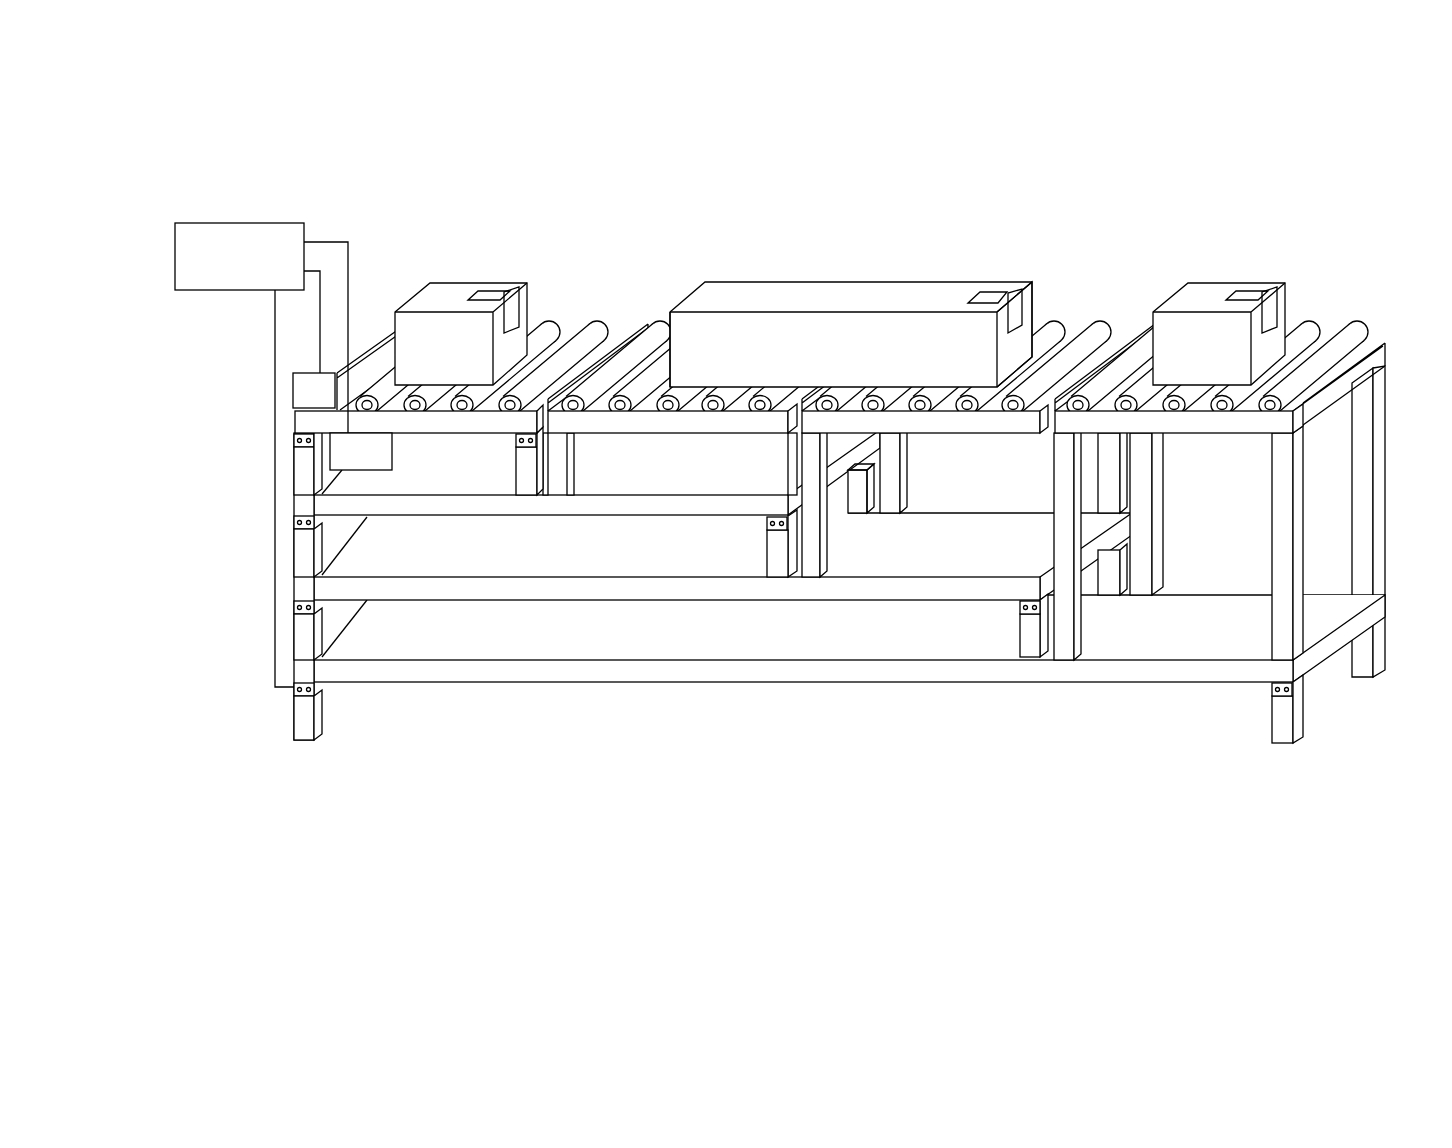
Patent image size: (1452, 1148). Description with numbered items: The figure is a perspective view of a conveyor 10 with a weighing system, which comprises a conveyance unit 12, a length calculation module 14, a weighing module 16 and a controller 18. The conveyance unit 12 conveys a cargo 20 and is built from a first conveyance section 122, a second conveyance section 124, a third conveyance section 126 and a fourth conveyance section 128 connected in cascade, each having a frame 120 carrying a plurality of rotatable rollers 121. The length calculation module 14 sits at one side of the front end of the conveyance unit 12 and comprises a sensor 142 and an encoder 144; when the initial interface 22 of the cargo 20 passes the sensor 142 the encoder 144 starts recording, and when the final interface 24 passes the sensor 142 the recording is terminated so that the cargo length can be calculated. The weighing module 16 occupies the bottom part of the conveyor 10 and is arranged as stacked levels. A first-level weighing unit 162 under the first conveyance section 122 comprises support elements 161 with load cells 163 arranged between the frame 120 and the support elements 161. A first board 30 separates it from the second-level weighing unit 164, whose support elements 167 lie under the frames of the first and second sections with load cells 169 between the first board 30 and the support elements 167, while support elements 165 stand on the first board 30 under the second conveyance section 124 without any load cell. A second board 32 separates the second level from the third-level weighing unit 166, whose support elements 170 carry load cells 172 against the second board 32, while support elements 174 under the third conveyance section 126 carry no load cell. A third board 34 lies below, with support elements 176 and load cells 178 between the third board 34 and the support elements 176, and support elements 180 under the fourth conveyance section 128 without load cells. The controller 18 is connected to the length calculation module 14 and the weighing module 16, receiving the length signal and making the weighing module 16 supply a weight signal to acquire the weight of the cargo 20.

The conveyor 10 is at (1436, 215).
The conveyance unit 12 is at (555, 222).
The length calculation module 14 is at (216, 360).
The weighing module 16 is at (171, 440).
The controller 18 is at (240, 230).
The cargo 20 is at (835, 293).
The initial interface 22 is at (1017, 353).
The final interface 24 is at (668, 349).
The first board 30 is at (680, 507).
The second board 32 is at (902, 590).
The third board 34 is at (903, 668).
The frame 120 is at (452, 425).
The rollers 121 is at (388, 355).
The first conveyance section 122 is at (567, 312).
The second conveyance section 124 is at (658, 312).
The third conveyance section 126 is at (1051, 312).
The fourth conveyance section 128 is at (1313, 312).
The sensor 142 is at (303, 387).
The encoder 144 is at (343, 437).
The support elements 161 is at (300, 478).
The first-level weighing unit 162 is at (220, 430).
The load cells 163 is at (300, 441).
The second-level weighing unit 164 is at (220, 498).
The support elements 165 is at (558, 467).
The third-level weighing unit 166 is at (220, 587).
The support elements 167 is at (300, 550).
The load cells 169 is at (293, 525).
The support elements 170 is at (300, 633).
The load cells 172 is at (293, 610).
The support elements 174 is at (813, 553).
The support elements 176 is at (293, 718).
The load cells 178 is at (293, 690).
The support elements 180 is at (1065, 620).